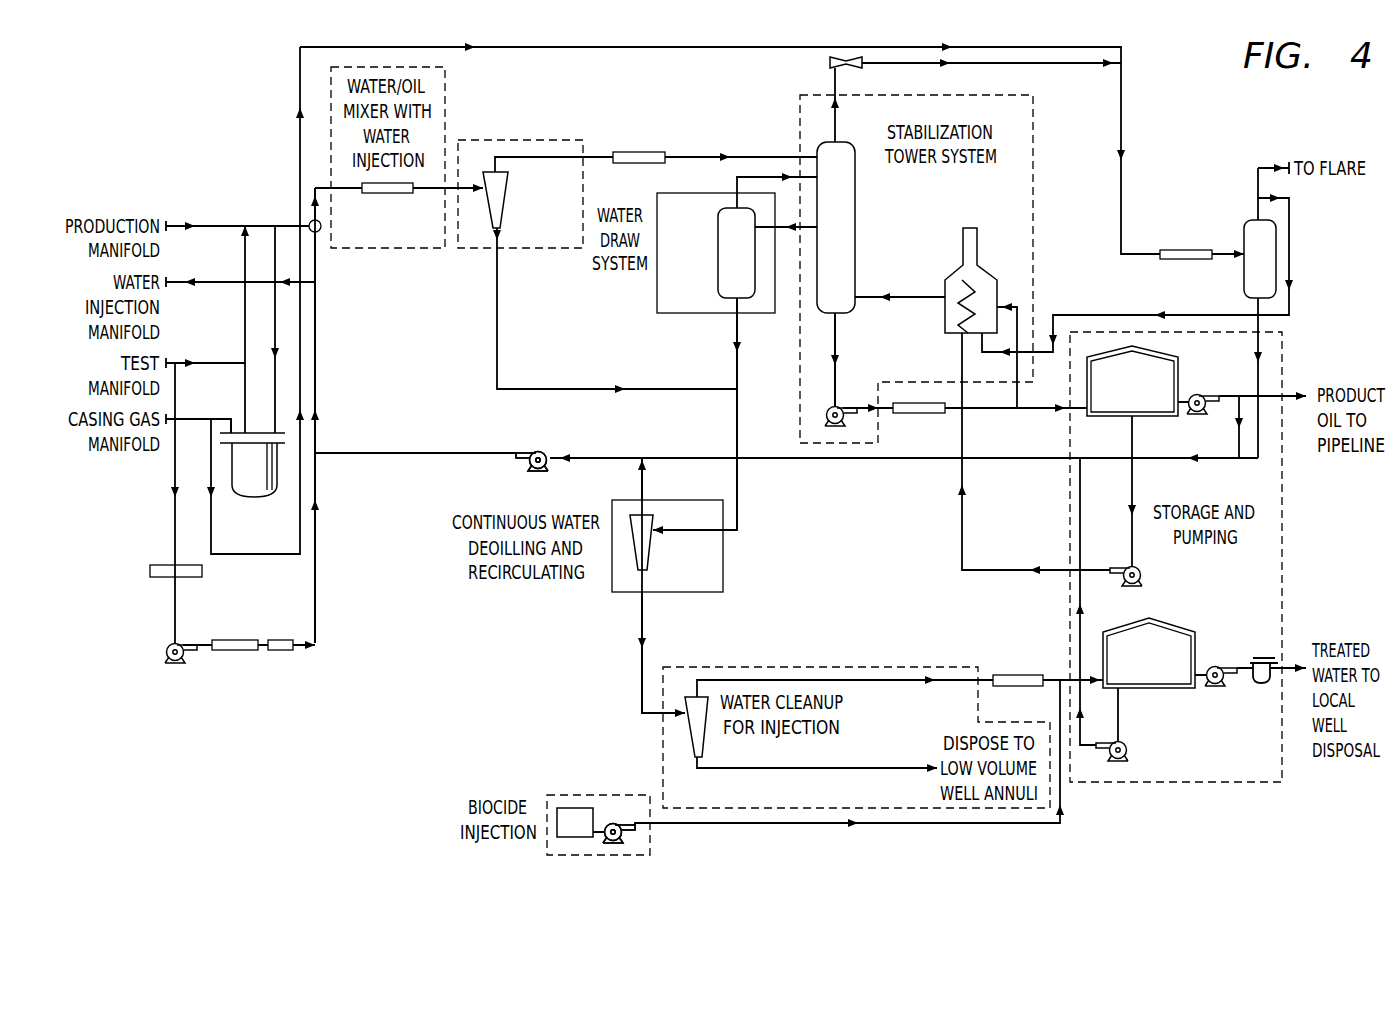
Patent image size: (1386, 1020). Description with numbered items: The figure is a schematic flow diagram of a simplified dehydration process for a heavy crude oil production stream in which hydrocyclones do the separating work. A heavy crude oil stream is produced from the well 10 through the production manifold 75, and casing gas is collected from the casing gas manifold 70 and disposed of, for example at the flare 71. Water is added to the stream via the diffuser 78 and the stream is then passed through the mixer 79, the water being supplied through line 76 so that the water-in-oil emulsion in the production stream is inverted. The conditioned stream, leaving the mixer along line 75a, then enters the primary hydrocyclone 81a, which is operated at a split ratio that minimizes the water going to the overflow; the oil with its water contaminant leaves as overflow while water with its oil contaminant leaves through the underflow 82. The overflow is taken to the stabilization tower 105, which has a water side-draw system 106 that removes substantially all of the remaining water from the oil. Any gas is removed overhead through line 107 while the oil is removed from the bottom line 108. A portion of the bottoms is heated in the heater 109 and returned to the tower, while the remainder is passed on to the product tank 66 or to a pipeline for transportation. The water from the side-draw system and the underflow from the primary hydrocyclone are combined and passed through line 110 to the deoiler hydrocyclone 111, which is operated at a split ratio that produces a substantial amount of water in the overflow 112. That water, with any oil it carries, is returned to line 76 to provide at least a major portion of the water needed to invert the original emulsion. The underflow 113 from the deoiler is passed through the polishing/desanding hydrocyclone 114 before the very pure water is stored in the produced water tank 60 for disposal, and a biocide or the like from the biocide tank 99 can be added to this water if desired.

The well 10 is at (283, 483).
The produced water tank 60 is at (1161, 669).
The product tank 66 is at (1144, 400).
The casing gas manifold 70 is at (1105, 47).
The flare 71 is at (1260, 162).
The production manifold 75 is at (215, 223).
The production line to mixer 75a is at (312, 186).
The line 76 is at (319, 382).
The diffuser 78 is at (308, 222).
The mixer 79 is at (388, 195).
The primary hydrocyclone 81a is at (505, 193).
The underflow 82 is at (493, 273).
The biocide tank 99 is at (570, 790).
The stabilization tower 105 is at (843, 193).
The water side-draw system 106 is at (720, 240).
The overhead line 107 is at (833, 83).
The bottom line 108 is at (837, 323).
The heater 109 is at (987, 274).
The line 110 is at (735, 369).
The deoiler hydrocyclone 111 is at (647, 545).
The overflow 112 is at (638, 488).
The underflow 113 is at (640, 625).
The polishing/desanding hydrocyclone 114 is at (703, 737).